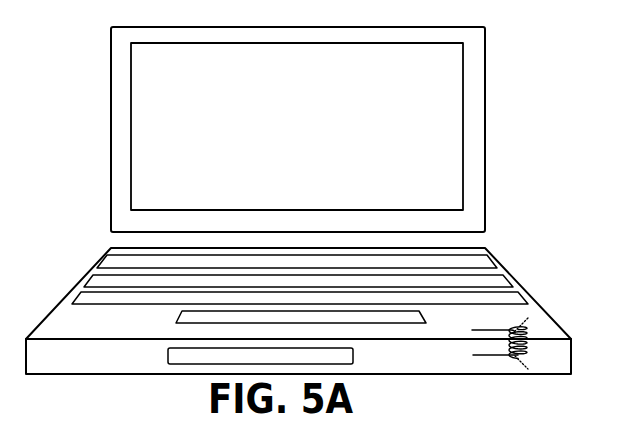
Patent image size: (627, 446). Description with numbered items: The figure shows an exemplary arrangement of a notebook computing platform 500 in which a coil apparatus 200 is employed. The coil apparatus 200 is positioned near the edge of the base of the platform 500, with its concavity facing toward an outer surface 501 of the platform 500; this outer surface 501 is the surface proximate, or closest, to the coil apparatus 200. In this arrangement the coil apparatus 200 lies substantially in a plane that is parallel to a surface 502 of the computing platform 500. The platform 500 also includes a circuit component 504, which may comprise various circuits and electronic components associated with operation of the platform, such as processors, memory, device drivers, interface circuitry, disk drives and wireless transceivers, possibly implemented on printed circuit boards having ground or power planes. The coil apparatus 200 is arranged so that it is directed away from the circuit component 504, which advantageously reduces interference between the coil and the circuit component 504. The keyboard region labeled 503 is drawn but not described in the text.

The notebook computing platform 500 is at (485, 93).
The outer surface 501 is at (551, 318).
The surface 502 is at (555, 370).
The keyboard 503 is at (528, 307).
The circuit component 504 is at (195, 365).
The coil apparatus 200 is at (502, 356).